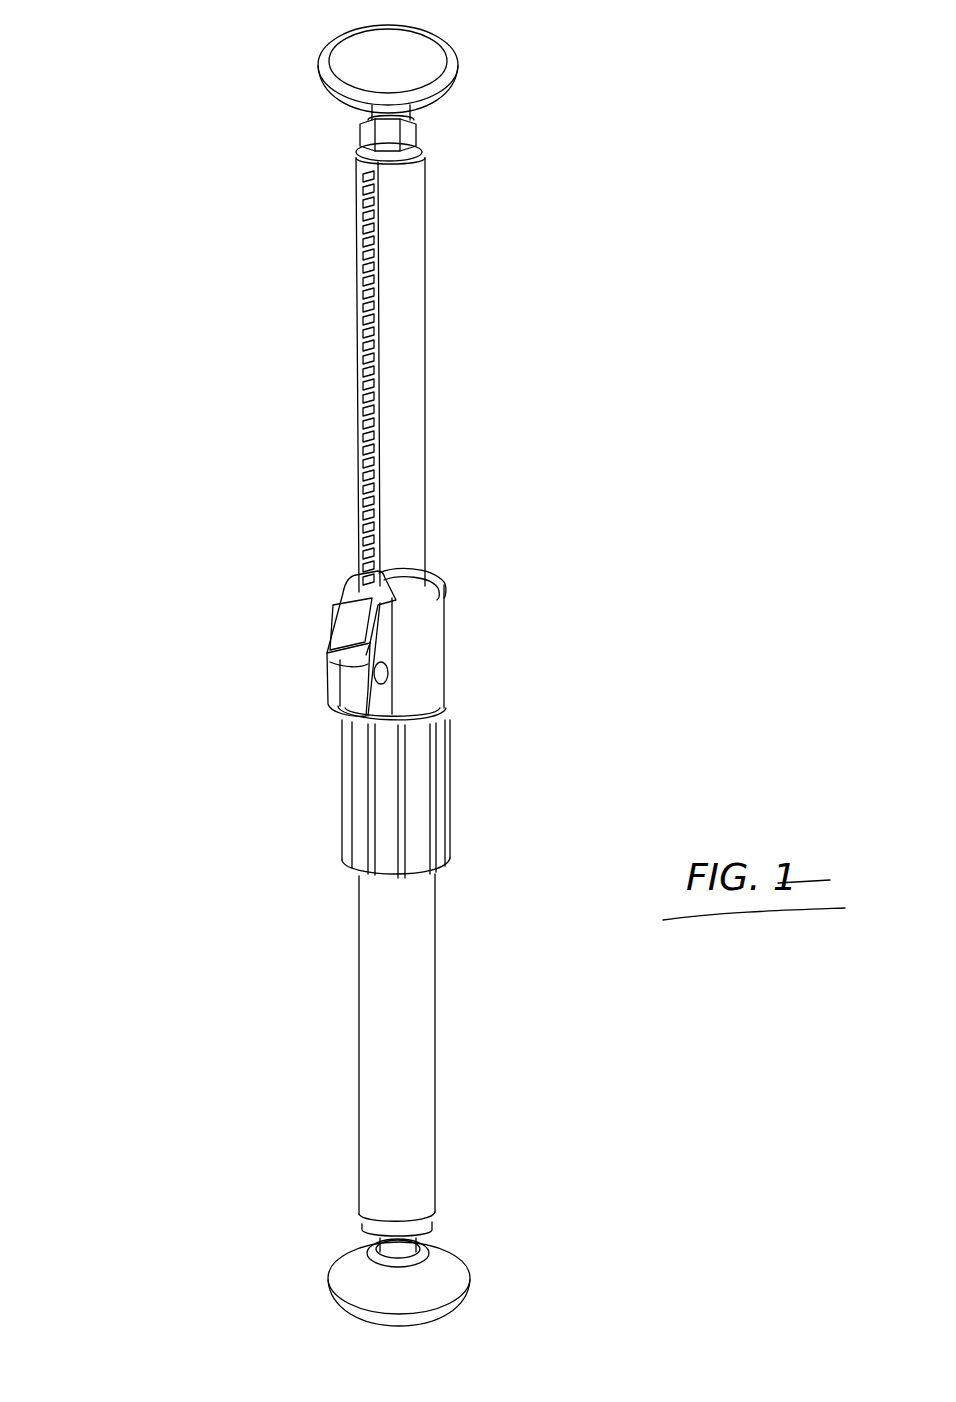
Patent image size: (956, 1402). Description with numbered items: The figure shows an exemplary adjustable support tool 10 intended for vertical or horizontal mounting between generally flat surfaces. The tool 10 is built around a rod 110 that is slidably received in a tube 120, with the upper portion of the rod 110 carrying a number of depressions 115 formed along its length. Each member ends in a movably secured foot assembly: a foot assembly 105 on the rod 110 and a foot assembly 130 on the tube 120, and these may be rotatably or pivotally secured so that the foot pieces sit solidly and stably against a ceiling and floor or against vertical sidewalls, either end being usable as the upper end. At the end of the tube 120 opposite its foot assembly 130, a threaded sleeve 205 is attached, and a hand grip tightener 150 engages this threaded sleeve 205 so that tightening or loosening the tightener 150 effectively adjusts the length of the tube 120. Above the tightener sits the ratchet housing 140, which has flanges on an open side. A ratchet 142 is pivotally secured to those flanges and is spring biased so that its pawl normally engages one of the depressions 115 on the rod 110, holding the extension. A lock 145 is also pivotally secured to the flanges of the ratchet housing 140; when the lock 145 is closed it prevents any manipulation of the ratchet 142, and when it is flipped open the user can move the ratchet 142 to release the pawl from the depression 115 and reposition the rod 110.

The adjustable support tool 10 is at (543, 704).
The foot assembly 105 is at (335, 100).
The rod 110 is at (355, 430).
The depressions 115 is at (375, 380).
The tube 120 is at (360, 990).
The foot assembly 130 is at (355, 1275).
The ratchet housing 140 is at (430, 622).
The ratchet 142 is at (360, 620).
The lock 145 is at (345, 680).
The hand grip tightener 150 is at (440, 832).
The threaded sleeve 205 is at (470, 799).